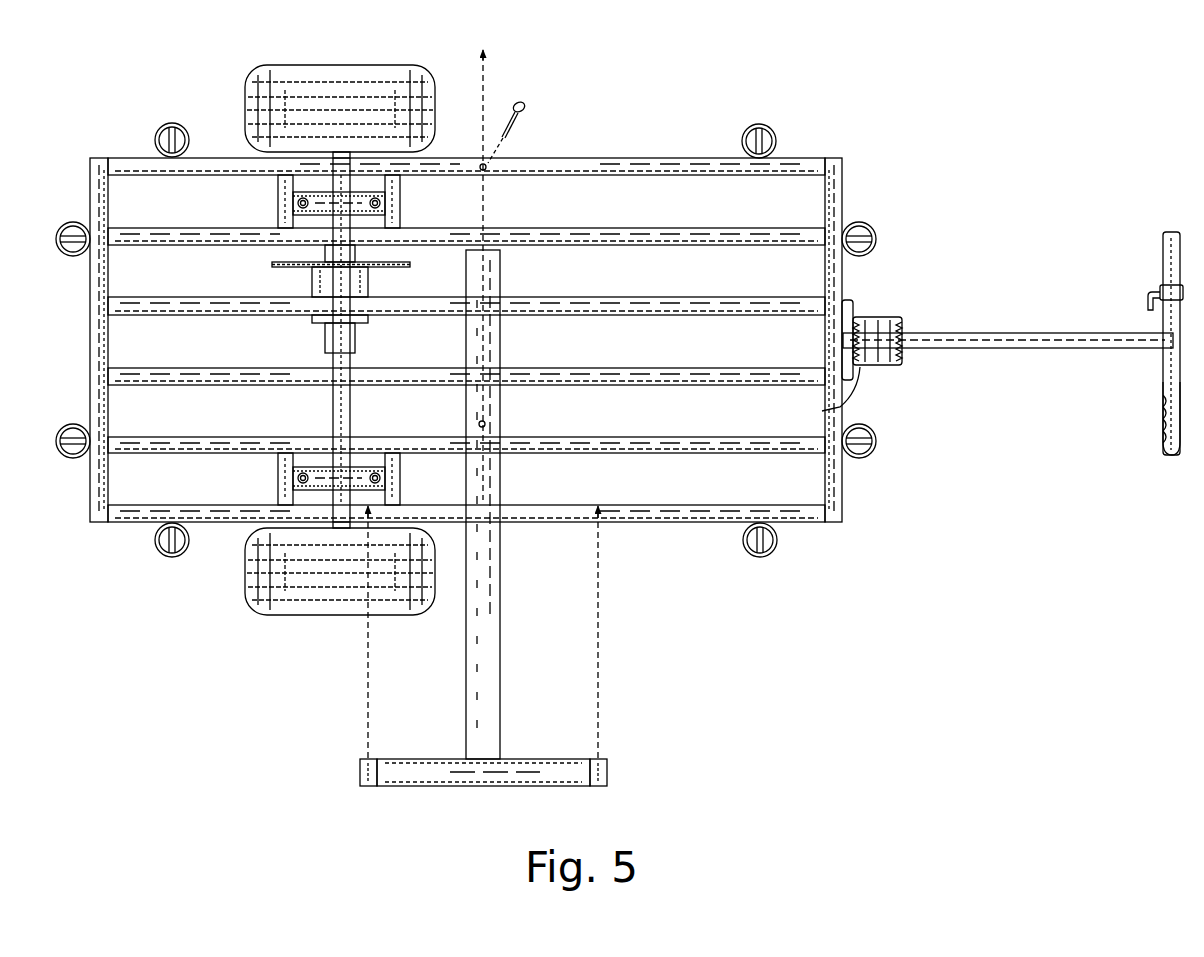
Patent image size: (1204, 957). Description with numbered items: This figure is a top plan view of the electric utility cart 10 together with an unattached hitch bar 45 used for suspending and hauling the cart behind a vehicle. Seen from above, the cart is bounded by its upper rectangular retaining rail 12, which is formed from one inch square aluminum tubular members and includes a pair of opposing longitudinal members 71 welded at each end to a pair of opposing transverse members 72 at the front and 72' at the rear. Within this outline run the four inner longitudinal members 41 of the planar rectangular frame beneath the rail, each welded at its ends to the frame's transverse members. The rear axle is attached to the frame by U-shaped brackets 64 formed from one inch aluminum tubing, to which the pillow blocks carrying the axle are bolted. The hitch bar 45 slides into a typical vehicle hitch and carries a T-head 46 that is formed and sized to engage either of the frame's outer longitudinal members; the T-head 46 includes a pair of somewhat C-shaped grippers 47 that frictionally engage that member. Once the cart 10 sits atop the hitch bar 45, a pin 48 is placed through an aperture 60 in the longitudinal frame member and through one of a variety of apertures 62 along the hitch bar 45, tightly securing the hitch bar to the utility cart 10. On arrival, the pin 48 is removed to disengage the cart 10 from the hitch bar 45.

The utility cart 10 is at (856, 84).
The retaining rail 12 is at (558, 524).
The inner longitudinal members 41 is at (710, 238).
The hitch bar 45 is at (440, 792).
The T-head 46 is at (493, 786).
The grippers 47 is at (362, 772).
The pin 48 is at (526, 105).
The aperture 60 is at (490, 164).
The apertures 62 is at (488, 423).
The U-shaped brackets 64 is at (403, 208).
The longitudinal members 71 is at (663, 168).
The transverse member 72 is at (859, 340).
The transverse member 72' is at (72, 340).